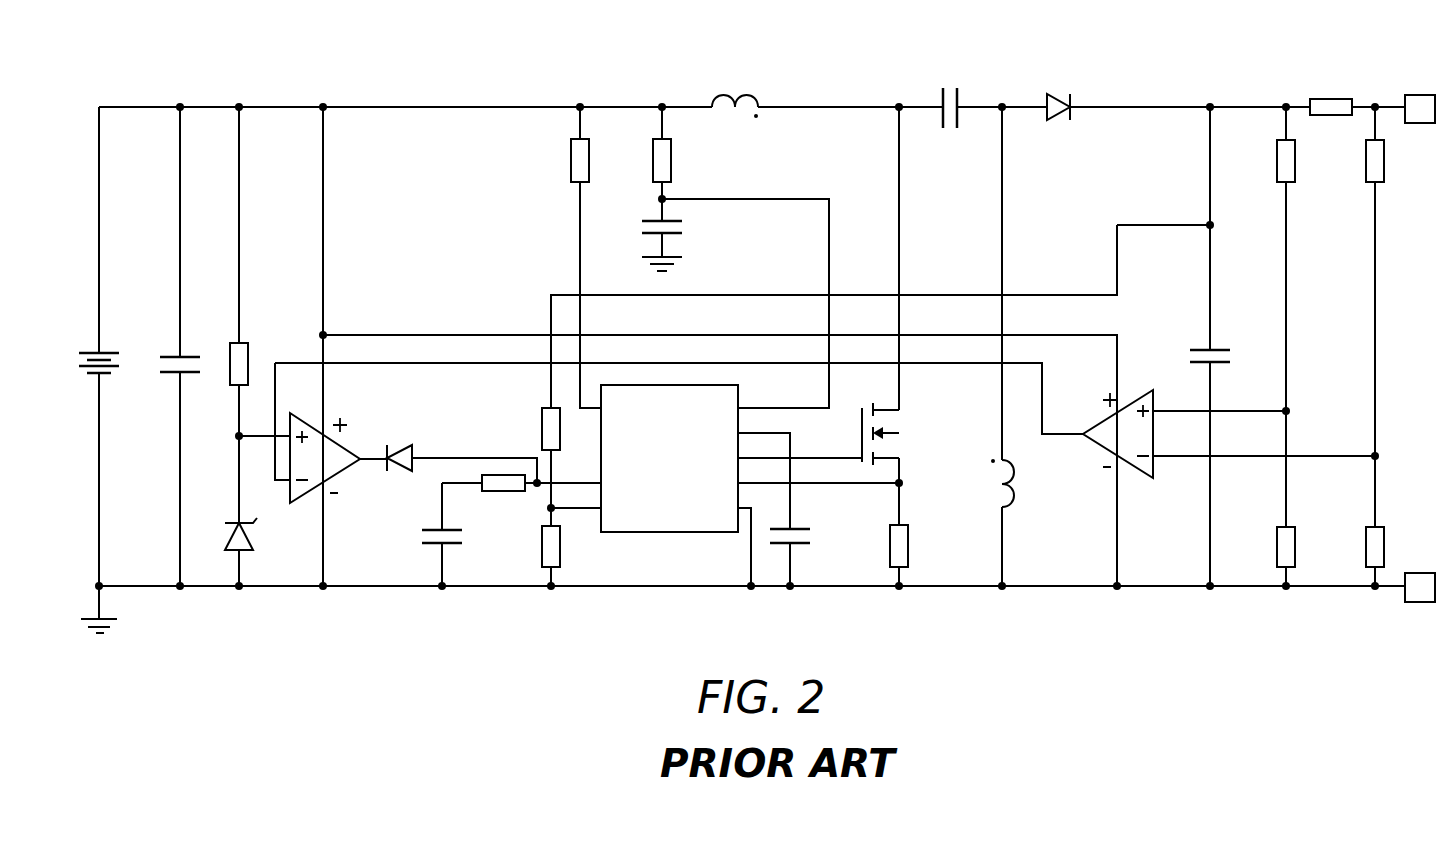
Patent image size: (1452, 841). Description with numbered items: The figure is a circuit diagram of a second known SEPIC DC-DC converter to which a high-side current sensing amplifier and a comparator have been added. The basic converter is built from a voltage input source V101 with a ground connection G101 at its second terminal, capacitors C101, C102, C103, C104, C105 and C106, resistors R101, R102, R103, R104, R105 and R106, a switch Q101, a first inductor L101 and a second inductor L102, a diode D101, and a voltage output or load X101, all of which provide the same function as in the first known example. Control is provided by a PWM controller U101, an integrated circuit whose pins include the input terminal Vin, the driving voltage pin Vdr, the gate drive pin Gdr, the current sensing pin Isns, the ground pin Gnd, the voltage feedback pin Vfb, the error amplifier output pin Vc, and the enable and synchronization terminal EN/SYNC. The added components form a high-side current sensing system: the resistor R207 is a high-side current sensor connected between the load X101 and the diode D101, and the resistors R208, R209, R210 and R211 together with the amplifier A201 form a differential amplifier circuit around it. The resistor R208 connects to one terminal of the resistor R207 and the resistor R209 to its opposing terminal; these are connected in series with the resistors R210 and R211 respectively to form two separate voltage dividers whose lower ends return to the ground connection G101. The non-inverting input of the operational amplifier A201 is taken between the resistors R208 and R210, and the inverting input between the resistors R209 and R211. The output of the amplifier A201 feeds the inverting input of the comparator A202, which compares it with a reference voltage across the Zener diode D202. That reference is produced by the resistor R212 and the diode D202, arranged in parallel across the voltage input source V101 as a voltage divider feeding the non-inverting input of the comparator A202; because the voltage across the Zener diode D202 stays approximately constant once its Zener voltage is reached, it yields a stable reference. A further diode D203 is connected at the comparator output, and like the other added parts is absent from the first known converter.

The voltage input source V101 is at (155, 375).
The capacitor C106 is at (162, 350).
The resistor R212 is at (246, 343).
The Zener diode D202 is at (230, 537).
The comparator A202 is at (345, 480).
The diode D203 is at (400, 445).
The resistor R104 is at (542, 428).
The resistor R103 is at (503, 492).
The resistor R105 is at (560, 560).
The capacitor C105 is at (455, 560).
The PWM controller U101 is at (672, 535).
The capacitor C104 is at (800, 550).
The resistor R106 is at (890, 530).
The switch Q101 is at (900, 418).
The second inductor L102 is at (1012, 487).
The amplifier A201 is at (1143, 480).
The capacitor C102 is at (1223, 348).
The resistor R210 is at (1292, 527).
The resistor R211 is at (1380, 527).
The resistor R208 is at (1292, 182).
The resistor R209 is at (1380, 182).
The high-side current sensor resistor R207 is at (1331, 99).
The voltage output or load X101 is at (1418, 95).
The capacitor C101 is at (950, 88).
The diode D101 is at (1052, 96).
The first inductor L101 is at (734, 96).
The resistor R102 is at (571, 155).
The resistor R101 is at (671, 158).
The capacitor C103 is at (682, 228).
The ground connection G101 is at (99, 637).